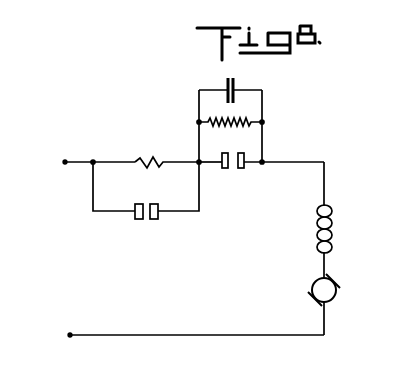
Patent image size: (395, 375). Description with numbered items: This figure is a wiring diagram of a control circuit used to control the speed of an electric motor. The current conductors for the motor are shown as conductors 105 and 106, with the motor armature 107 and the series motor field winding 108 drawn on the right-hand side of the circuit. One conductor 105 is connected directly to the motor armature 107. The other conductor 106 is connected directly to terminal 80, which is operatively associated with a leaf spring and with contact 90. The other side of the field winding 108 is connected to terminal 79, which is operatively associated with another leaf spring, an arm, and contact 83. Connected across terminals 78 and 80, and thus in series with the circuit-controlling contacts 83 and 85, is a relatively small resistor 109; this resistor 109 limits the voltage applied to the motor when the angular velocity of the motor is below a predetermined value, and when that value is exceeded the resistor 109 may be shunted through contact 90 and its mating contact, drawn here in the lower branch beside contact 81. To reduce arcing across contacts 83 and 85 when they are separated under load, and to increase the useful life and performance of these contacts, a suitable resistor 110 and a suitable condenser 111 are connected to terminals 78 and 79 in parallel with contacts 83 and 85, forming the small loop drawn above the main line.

The terminal 78 is at (197, 161).
The terminal 79 is at (263, 161).
The terminal 80 is at (93, 161).
The contact 81 is at (149, 219).
The contact 83 is at (241, 168).
The contact 85 is at (225, 168).
The contact 90 is at (134, 218).
The current conductor 105 is at (151, 321).
The current conductor 106 is at (78, 163).
The motor armature 107 is at (312, 284).
The series motor field winding 108 is at (313, 232).
The resistor 109 is at (141, 157).
The resistor 110 is at (252, 113).
The condenser 111 is at (235, 84).